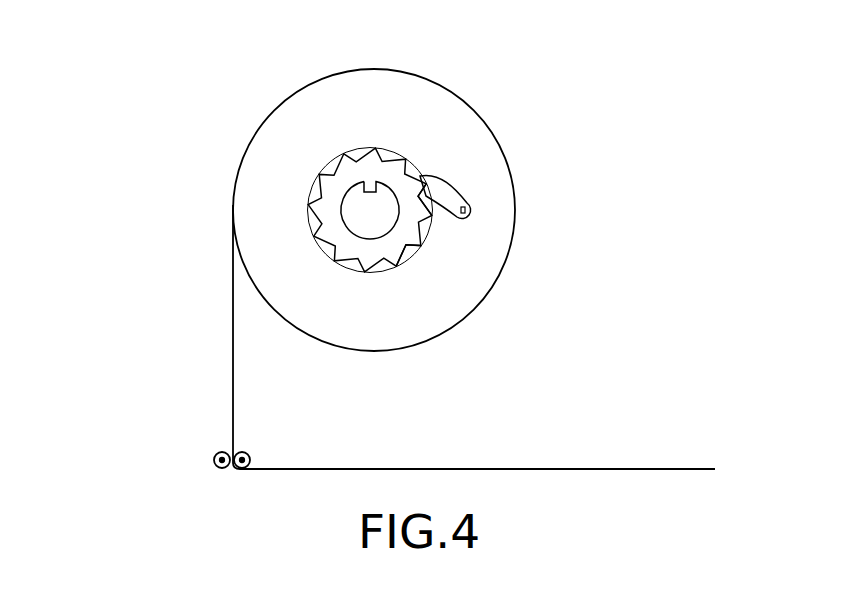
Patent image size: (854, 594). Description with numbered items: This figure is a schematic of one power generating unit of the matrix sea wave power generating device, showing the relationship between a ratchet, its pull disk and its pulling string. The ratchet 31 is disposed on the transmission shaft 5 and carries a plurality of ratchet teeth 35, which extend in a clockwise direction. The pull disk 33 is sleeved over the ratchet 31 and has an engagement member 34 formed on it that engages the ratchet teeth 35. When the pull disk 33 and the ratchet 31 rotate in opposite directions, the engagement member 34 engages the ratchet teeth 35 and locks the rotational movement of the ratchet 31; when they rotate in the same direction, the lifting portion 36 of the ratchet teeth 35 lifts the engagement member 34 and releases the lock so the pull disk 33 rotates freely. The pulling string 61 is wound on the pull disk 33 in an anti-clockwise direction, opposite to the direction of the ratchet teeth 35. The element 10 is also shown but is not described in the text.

The transmission shaft 5 is at (383, 212).
The rollers 10 is at (230, 455).
The ratchet 31 is at (332, 205).
The pull disk 33 is at (345, 70).
The engagement member 34 is at (443, 182).
The ratchet teeth 35 is at (432, 206).
The lifting portion 36 is at (417, 257).
The pulling string 61 is at (338, 468).